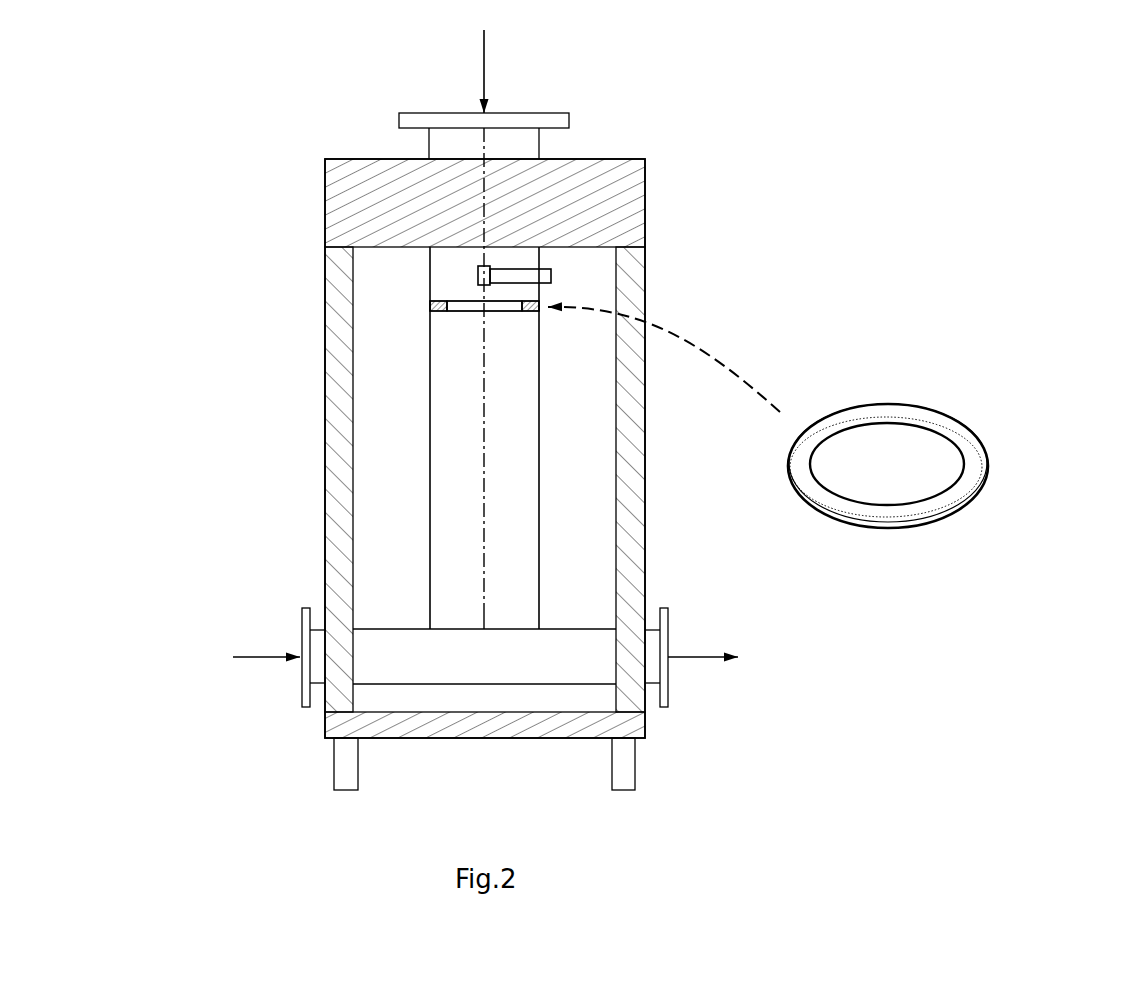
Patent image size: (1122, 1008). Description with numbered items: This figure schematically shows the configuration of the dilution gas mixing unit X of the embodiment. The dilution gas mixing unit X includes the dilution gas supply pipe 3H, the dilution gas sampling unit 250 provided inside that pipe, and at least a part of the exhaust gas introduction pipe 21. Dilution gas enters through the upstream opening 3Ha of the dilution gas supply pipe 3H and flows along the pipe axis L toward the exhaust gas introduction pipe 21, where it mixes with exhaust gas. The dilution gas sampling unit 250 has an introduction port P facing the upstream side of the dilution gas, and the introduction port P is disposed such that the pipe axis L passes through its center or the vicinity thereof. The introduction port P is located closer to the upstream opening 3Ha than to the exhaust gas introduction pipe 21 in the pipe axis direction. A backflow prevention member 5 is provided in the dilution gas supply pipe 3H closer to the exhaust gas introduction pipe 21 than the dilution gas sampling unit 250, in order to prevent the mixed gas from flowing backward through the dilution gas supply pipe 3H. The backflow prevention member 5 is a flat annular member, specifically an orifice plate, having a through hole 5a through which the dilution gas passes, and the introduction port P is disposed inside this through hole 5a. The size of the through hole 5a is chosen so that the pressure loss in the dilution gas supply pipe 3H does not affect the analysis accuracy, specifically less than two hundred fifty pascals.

The dilution gas mixing unit X is at (258, 137).
The dilution gas supply pipe 3H is at (542, 567).
The upstream opening 3Ha is at (442, 112).
The backflow prevention member 5 is at (716, 414).
The through hole 5a is at (468, 312).
The dilution gas sampling unit 250 is at (551, 276).
The introduction port P is at (492, 262).
The pipe axis L is at (484, 480).
The exhaust gas introduction pipe 21 is at (485, 685).